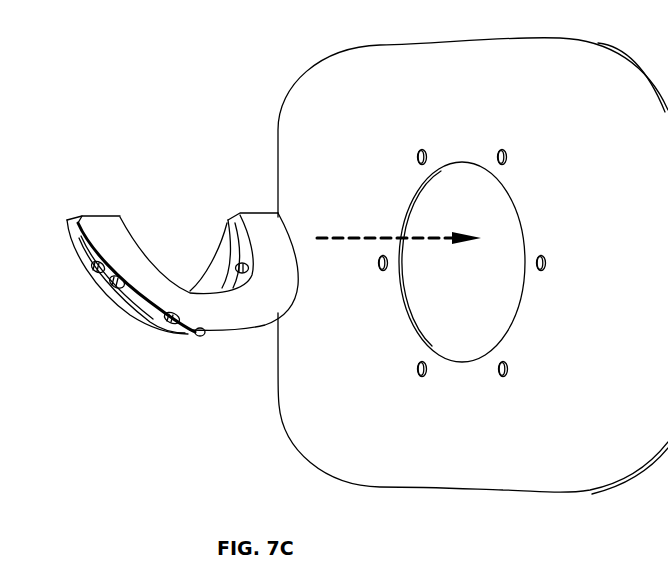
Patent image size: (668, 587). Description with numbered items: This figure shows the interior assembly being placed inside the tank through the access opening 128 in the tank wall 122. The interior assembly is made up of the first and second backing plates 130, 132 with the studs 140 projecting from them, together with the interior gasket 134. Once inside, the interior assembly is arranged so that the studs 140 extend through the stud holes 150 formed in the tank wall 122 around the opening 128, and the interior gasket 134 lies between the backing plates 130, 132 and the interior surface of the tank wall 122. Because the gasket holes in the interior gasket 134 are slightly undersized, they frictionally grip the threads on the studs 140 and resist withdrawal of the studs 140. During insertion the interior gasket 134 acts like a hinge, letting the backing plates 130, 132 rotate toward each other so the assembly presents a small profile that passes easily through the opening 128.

The tank wall 122 is at (463, 462).
The opening 128 is at (498, 203).
The stud holes 150 is at (547, 264).
The second backing plate 132 is at (120, 242).
The first backing plate 130 is at (92, 293).
The interior gasket 134 is at (133, 310).
The studs 140 is at (205, 333).